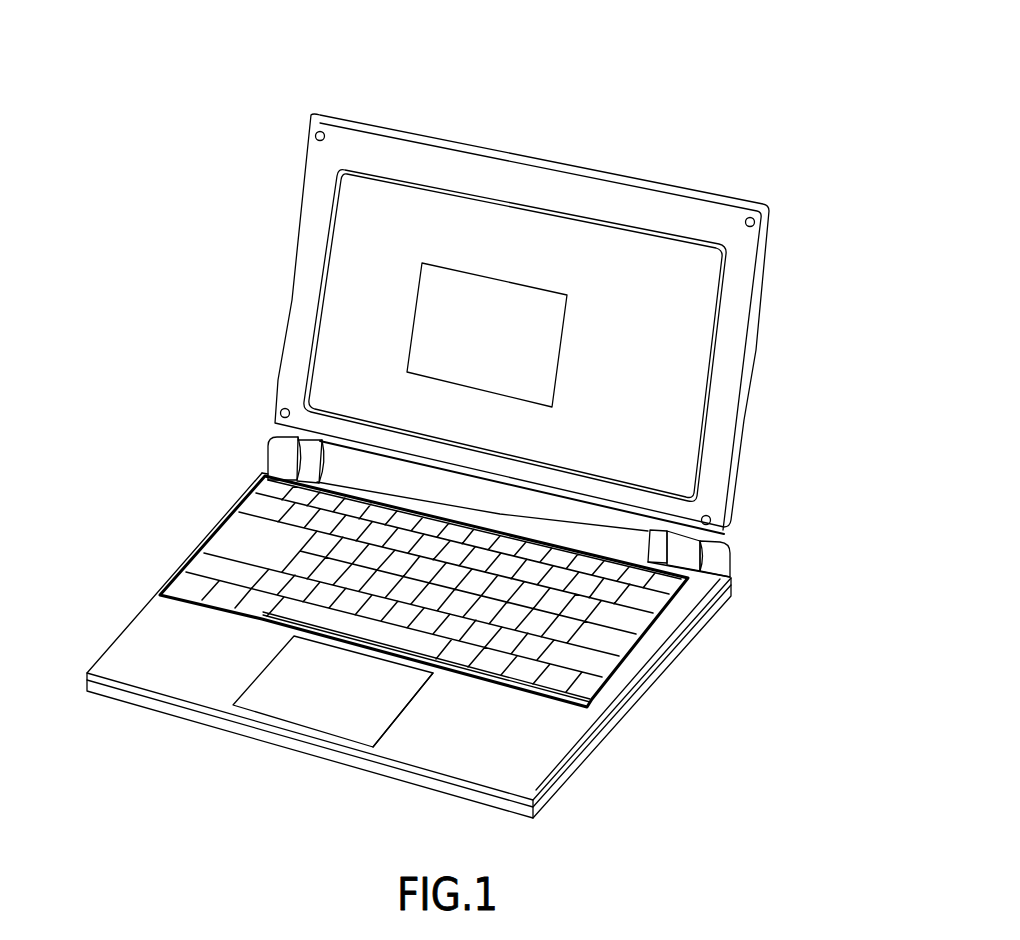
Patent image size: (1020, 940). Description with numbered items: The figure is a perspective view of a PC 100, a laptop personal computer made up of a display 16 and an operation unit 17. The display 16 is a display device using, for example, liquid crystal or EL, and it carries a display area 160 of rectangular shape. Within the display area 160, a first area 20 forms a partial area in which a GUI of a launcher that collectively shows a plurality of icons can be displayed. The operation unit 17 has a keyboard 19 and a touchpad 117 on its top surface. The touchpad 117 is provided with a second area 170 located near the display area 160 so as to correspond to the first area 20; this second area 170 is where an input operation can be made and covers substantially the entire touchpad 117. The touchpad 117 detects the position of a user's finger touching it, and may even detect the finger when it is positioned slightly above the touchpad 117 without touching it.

The PC 100 is at (737, 95).
The display 16 is at (758, 310).
The display area 160 is at (682, 368).
The first area 20 is at (473, 274).
The operation unit 17 is at (635, 694).
The keyboard 19 is at (635, 622).
The second area 170 is at (323, 703).
The touchpad 117 is at (407, 710).